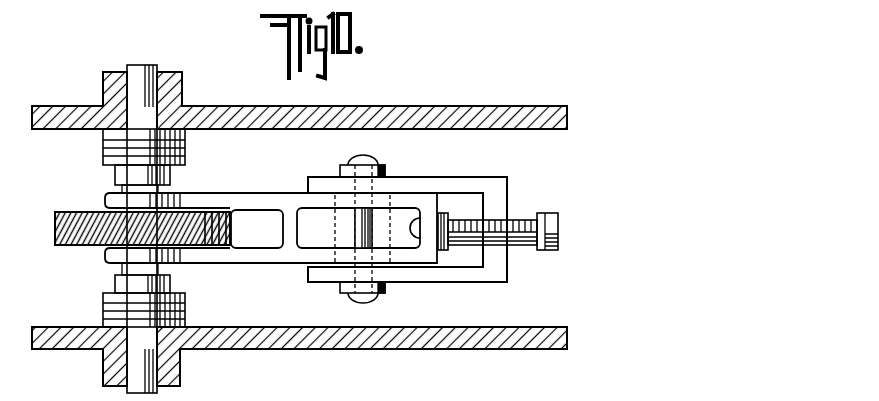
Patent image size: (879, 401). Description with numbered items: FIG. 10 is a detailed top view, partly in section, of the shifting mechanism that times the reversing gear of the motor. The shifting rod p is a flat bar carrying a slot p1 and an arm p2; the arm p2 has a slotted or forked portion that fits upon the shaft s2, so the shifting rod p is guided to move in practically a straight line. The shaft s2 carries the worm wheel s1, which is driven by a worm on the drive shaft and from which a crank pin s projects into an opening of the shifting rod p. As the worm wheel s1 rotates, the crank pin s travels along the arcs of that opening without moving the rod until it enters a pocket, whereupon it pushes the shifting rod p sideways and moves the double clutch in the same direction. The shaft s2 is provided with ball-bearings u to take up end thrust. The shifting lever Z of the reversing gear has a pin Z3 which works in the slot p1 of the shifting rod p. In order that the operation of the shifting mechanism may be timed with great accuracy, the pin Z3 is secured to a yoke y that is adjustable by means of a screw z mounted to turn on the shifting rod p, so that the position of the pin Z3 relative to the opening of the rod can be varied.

The shaft s2 is at (170, 42).
The ball-bearings u is at (115, 147).
The shifting rod p is at (271, 225).
The arm p2 is at (333, 184).
The slot p1 is at (352, 233).
The worm wheel s1 is at (232, 223).
The crank pin s is at (200, 250).
The yoke y is at (465, 171).
The shifting lever Z is at (380, 167).
The pin Z3 is at (380, 216).
The screw z is at (517, 223).